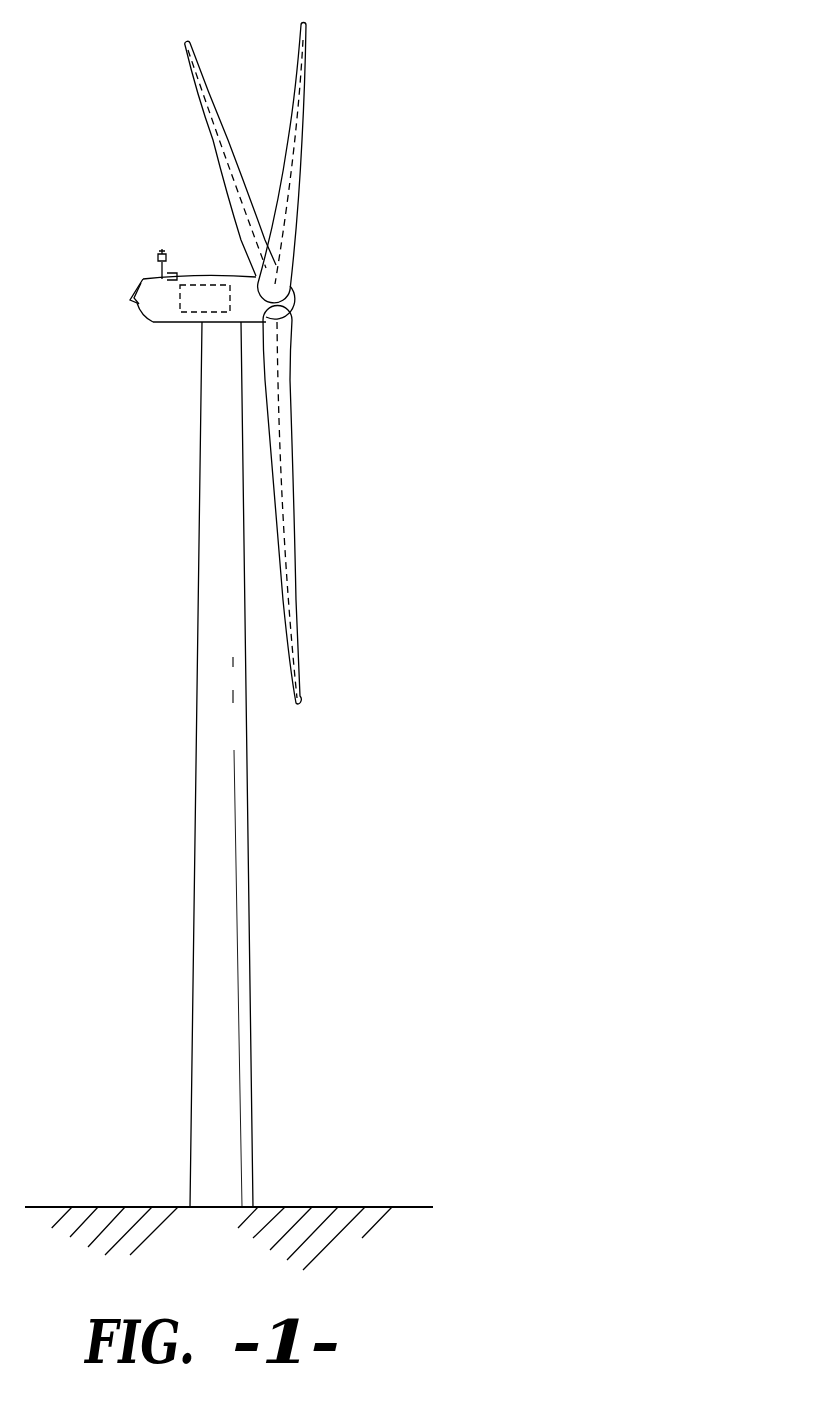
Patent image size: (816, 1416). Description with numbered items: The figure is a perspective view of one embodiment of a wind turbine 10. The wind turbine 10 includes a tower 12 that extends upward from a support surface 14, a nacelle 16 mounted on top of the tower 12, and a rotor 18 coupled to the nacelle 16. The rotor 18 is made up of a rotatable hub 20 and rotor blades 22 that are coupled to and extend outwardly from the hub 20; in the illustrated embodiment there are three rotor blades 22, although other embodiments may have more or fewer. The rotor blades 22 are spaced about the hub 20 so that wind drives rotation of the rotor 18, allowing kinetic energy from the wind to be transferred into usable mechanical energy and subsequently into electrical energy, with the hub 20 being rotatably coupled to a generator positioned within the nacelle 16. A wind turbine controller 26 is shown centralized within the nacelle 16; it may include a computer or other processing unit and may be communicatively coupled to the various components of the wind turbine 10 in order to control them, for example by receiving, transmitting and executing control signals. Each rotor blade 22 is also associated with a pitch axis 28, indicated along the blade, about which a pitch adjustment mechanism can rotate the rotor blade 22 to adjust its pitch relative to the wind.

The wind turbine 10 is at (436, 103).
The tower 12 is at (207, 887).
The support surface 14 is at (113, 1207).
The nacelle 16 is at (175, 324).
The rotor 18 is at (310, 268).
The rotatable hub 20 is at (297, 308).
The rotor blade 22 is at (297, 65).
The wind turbine controller 26 is at (208, 284).
The pitch axis 28 is at (228, 200).